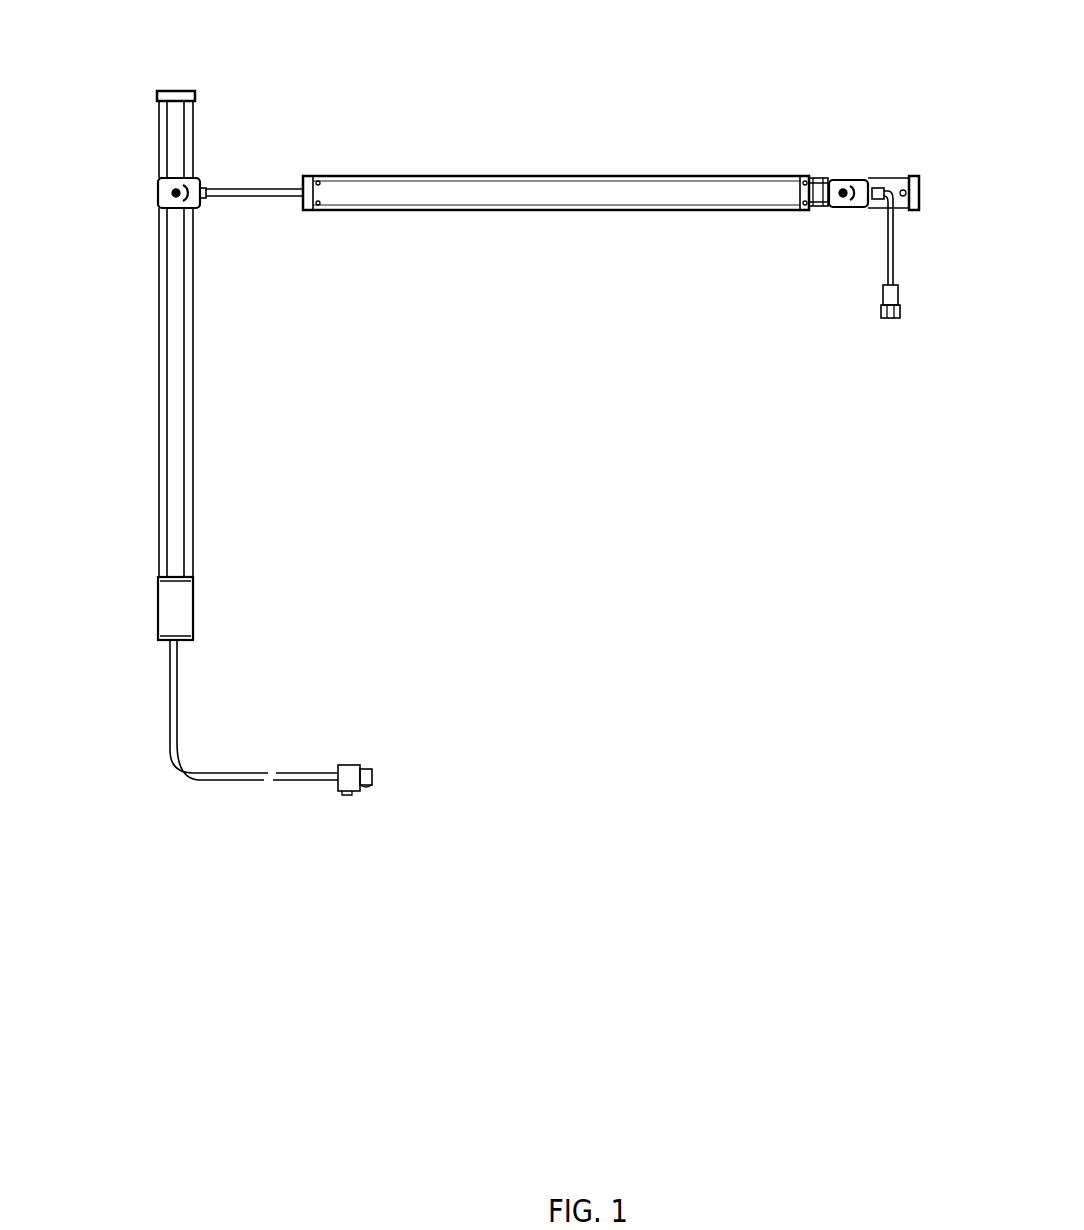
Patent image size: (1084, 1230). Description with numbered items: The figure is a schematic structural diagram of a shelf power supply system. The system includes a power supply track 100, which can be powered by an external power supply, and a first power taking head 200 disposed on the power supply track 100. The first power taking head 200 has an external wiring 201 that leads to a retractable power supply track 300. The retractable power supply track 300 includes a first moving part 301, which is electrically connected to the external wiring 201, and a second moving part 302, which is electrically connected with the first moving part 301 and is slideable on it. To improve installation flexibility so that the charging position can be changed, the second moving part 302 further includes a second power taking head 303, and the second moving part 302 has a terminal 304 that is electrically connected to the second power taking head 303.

The power supply track 100 is at (174, 398).
The first power taking head 200 is at (158, 192).
The external wiring 201 is at (252, 188).
The retractable power supply track 300 is at (948, 72).
The first moving part 301 is at (742, 176).
The second moving part 302 is at (810, 176).
The second power taking head 303 is at (855, 178).
The terminal 304 is at (900, 176).